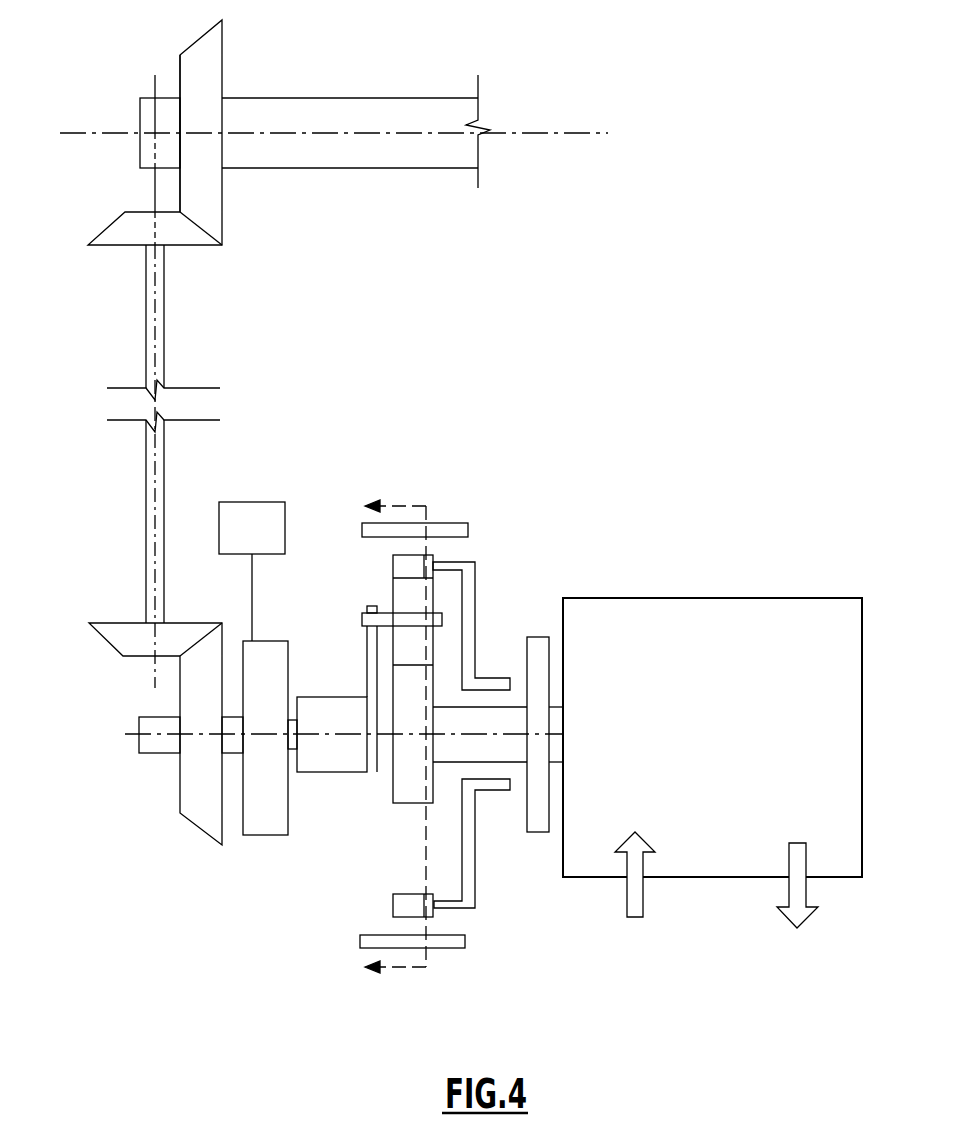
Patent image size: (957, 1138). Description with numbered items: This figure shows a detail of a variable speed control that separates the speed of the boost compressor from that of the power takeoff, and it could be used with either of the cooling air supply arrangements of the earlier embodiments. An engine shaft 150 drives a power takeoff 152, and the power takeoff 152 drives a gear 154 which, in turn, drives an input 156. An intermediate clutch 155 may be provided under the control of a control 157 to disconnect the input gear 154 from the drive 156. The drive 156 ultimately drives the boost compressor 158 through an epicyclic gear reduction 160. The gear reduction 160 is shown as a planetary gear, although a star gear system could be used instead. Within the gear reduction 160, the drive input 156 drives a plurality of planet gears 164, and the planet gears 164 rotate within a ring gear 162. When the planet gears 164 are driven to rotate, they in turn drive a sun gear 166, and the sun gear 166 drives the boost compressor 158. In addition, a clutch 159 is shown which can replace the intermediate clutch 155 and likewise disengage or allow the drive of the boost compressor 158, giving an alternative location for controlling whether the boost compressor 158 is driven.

The engine shaft 150 is at (307, 113).
The power takeoff 152 is at (131, 237).
The gear 154 is at (188, 795).
The intermediate clutch 155 is at (264, 818).
The input 156 is at (323, 759).
The control 157 is at (244, 513).
The boost compressor 158 is at (618, 643).
The clutch 159 is at (538, 653).
The epicyclic gear reduction 160 is at (465, 737).
The ring gear 162 is at (402, 907).
The planet gears 164 is at (402, 597).
The sun gear 166 is at (408, 793).